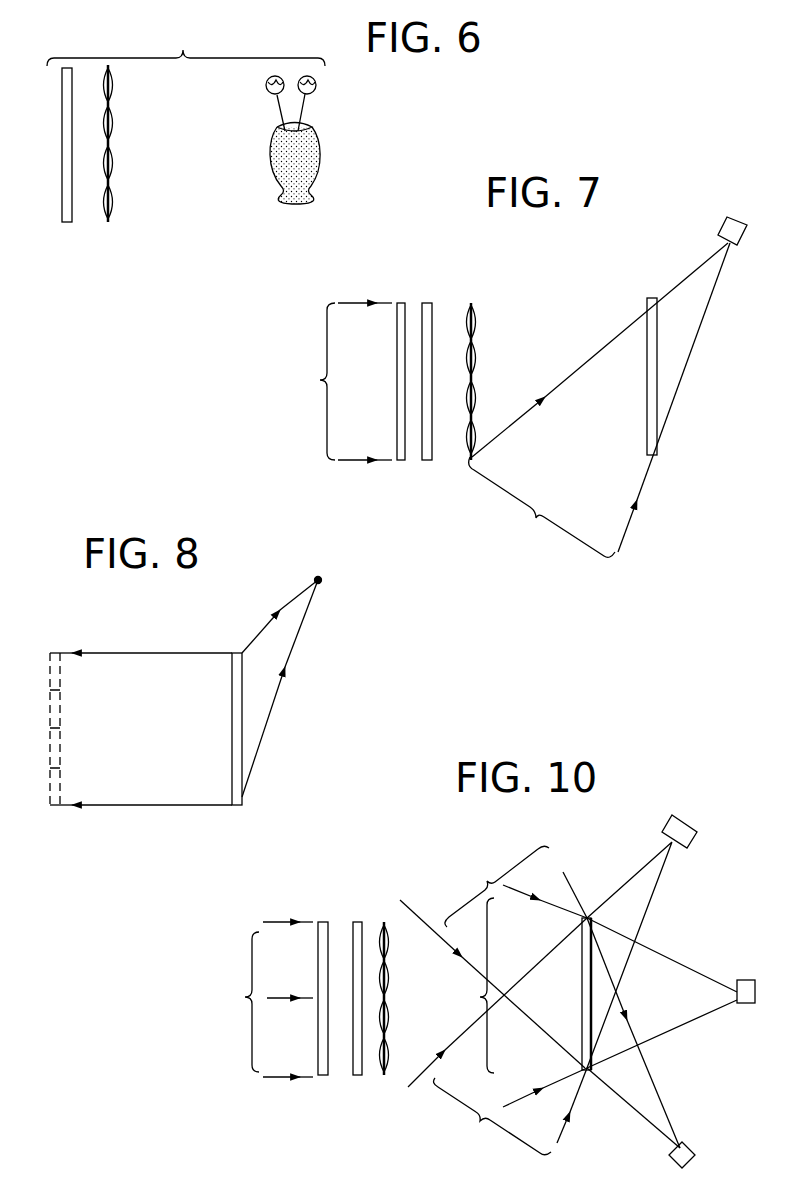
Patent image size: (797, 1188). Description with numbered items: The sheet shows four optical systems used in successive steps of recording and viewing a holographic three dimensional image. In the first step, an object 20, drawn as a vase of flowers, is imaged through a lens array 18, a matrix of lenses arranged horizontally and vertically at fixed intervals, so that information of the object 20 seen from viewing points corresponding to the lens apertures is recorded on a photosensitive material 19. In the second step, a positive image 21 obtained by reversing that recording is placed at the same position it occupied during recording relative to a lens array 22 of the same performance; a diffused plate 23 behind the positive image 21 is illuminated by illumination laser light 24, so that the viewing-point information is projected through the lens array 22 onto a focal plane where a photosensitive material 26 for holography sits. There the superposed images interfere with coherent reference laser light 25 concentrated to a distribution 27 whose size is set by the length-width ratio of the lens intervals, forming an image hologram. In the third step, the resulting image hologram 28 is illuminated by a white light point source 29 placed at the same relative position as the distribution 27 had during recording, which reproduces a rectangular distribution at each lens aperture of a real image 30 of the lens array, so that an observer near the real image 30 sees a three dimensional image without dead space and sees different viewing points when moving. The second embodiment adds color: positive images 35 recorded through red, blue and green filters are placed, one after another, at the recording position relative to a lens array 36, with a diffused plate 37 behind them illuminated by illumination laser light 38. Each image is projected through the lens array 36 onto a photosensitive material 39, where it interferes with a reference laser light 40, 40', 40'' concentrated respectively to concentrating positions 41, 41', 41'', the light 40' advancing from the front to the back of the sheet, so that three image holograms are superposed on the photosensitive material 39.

In FIG. 6, the lens array 18 is at (112, 75).
In FIG. 6, the photosensitive material 19 is at (62, 117).
In FIG. 6, the object 20 is at (272, 165).
In FIG. 7, the positive image 21 is at (427, 303).
In FIG. 7, the lens array 22 is at (473, 304).
In FIG. 7, the diffused plate 23 is at (401, 303).
In FIG. 7, the illumination laser light 24 is at (340, 381).
In FIG. 7, the reference laser light 25 is at (542, 507).
In FIG. 7, the photosensitive material for holography 26 is at (647, 375).
In FIG. 7, the distribution 27 is at (742, 245).
In FIG. 8, the image hologram 28 is at (232, 704).
In FIG. 8, the white light point source 29 is at (320, 578).
In FIG. 8, the real image of the lens array 30 is at (56, 718).
In FIG. 10, the positive image 35 is at (356, 921).
In FIG. 10, the lens array 36 is at (390, 992).
In FIG. 10, the diffused plate 37 is at (323, 921).
In FIG. 10, the illumination laser light 38 is at (263, 999).
In FIG. 10, the photosensitive material for holography 39 is at (583, 970).
In FIG. 10, the reference laser light 40 is at (510, 1115).
In FIG. 10, the reference laser light 40' is at (493, 992).
In FIG. 10, the reference laser light 40'' is at (516, 886).
In FIG. 10, the concentrating position 41 is at (667, 941).
In FIG. 10, the concentrating position 41' is at (675, 993).
In FIG. 10, the concentrating position 41'' is at (672, 1043).